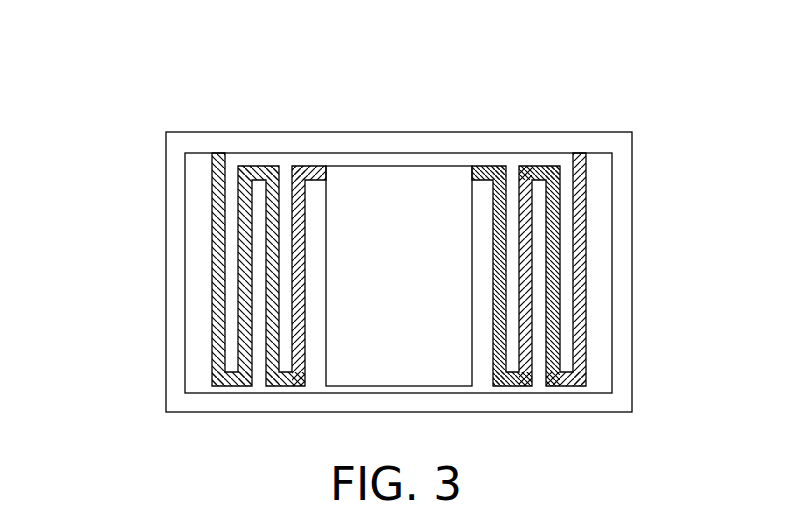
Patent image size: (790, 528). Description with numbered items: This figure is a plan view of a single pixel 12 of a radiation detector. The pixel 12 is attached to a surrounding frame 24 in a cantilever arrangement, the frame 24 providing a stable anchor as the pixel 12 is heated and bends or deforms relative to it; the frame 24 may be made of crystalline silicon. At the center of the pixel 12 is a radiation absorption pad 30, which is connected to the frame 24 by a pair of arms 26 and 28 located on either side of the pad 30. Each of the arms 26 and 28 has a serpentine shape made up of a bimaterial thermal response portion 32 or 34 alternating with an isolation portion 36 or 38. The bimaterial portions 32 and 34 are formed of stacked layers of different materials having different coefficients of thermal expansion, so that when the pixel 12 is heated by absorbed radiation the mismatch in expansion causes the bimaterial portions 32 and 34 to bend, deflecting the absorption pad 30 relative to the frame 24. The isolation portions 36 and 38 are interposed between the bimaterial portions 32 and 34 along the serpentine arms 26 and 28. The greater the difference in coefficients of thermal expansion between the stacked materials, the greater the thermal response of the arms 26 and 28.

The pixel 12 is at (187, 91).
The frame 24 is at (270, 132).
The arm 26 is at (212, 338).
The arm 28 is at (588, 208).
The radiation absorption pad 30 is at (417, 192).
The bimaterial thermal response portion 32 is at (293, 285).
The bimaterial thermal response portion 34 is at (506, 283).
The isolation portion 36 is at (273, 220).
The isolation portion 38 is at (533, 347).